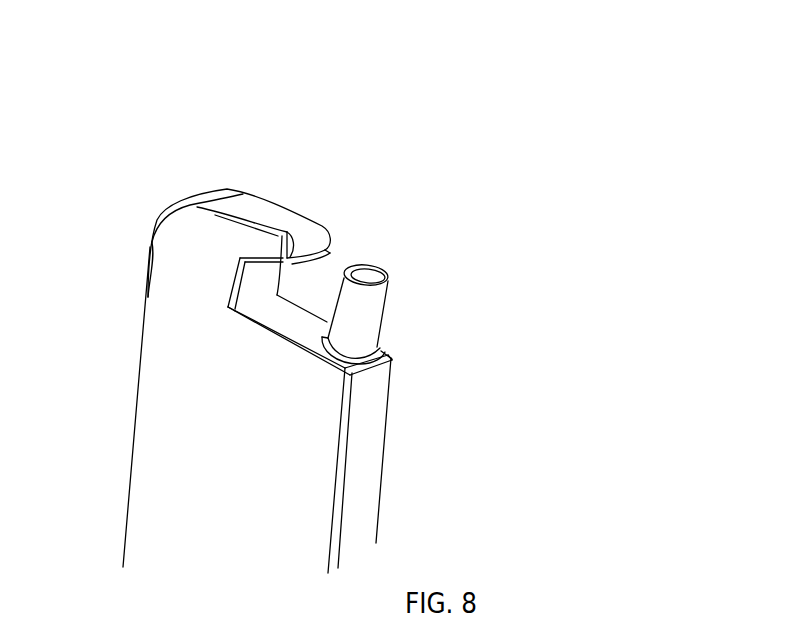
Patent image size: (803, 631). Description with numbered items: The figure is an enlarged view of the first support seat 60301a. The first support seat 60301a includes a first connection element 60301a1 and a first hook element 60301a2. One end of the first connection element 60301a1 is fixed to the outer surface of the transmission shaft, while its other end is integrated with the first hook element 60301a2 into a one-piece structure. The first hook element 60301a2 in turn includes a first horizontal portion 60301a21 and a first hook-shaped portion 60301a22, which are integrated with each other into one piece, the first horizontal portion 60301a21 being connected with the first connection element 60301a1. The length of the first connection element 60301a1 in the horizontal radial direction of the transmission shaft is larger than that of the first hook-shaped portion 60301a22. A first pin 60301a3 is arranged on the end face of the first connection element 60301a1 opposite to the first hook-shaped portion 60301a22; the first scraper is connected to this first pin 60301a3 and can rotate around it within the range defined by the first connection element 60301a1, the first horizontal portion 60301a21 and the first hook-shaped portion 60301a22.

The first support seat 60301a is at (328, 52).
The first connection element 60301a1 is at (298, 458).
The first hook element 60301a2 is at (497, 153).
The first horizontal portion 60301a21 is at (262, 242).
The first hook-shaped portion 60301a22 is at (262, 288).
The first pin 60301a3 is at (370, 313).